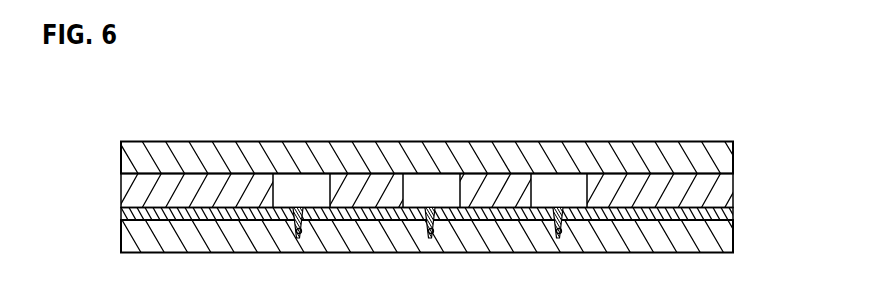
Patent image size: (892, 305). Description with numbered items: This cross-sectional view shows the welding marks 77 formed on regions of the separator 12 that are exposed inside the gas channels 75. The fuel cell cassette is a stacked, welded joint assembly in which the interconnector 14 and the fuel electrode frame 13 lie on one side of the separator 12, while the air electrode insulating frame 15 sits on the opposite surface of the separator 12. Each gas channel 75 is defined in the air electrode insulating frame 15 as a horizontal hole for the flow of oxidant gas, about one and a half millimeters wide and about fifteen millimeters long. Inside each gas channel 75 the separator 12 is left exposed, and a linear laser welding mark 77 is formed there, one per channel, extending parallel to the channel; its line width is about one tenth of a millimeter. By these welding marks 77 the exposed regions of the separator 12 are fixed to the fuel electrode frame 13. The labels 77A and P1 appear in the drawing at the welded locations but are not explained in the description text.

The interconnector 14 is at (735, 150).
The air electrode insulating frame 15 is at (718, 192).
The separator 12 is at (722, 212).
The fuel electrode frame 13 is at (722, 243).
The gas channel 75 is at (327, 188).
The conductive via 77A is at (300, 208).
The welding mark 77 is at (301, 234).
The position P1 is at (292, 202).